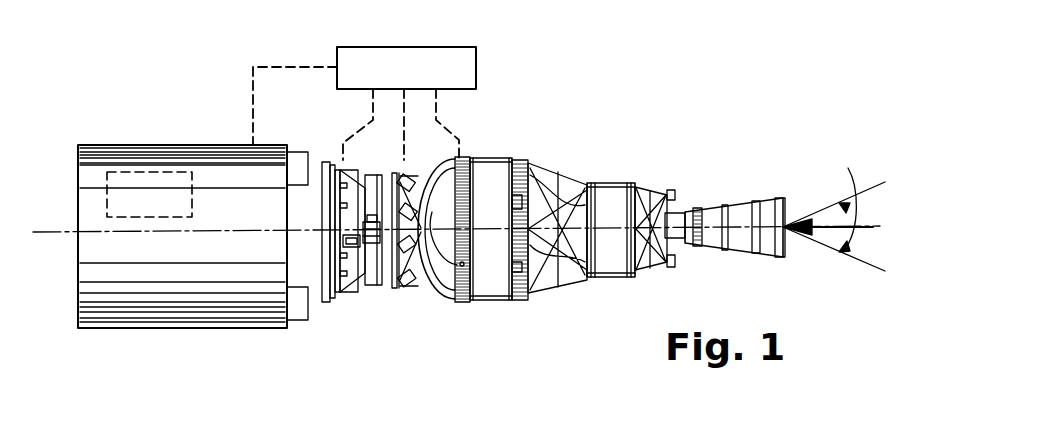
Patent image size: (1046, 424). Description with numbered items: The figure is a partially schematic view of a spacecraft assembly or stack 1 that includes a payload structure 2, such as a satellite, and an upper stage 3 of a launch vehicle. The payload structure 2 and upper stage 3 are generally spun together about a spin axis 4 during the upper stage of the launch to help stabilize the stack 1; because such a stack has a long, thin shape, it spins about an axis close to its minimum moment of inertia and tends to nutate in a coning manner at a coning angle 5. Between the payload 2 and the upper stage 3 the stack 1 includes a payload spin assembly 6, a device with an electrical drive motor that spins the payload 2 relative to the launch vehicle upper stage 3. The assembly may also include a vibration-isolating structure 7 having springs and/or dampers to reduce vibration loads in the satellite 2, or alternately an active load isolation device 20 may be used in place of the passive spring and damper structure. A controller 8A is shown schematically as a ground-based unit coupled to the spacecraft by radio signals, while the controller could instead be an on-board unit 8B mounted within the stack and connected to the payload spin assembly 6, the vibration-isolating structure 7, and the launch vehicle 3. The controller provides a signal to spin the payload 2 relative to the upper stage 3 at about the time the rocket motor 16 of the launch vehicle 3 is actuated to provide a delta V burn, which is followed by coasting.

The stack 1 is at (636, 75).
The payload structure 2 is at (193, 218).
The upper stage 3 is at (601, 245).
The spin axis 4 is at (52, 232).
The coning angle 5 is at (853, 185).
The payload spin assembly 6 is at (358, 300).
The vibration-isolating structure 7 is at (438, 287).
The active load isolation device 20 is at (414, 293).
The controller 8A is at (486, 70).
The controller 8B is at (143, 172).
The rocket motor 16 is at (577, 197).